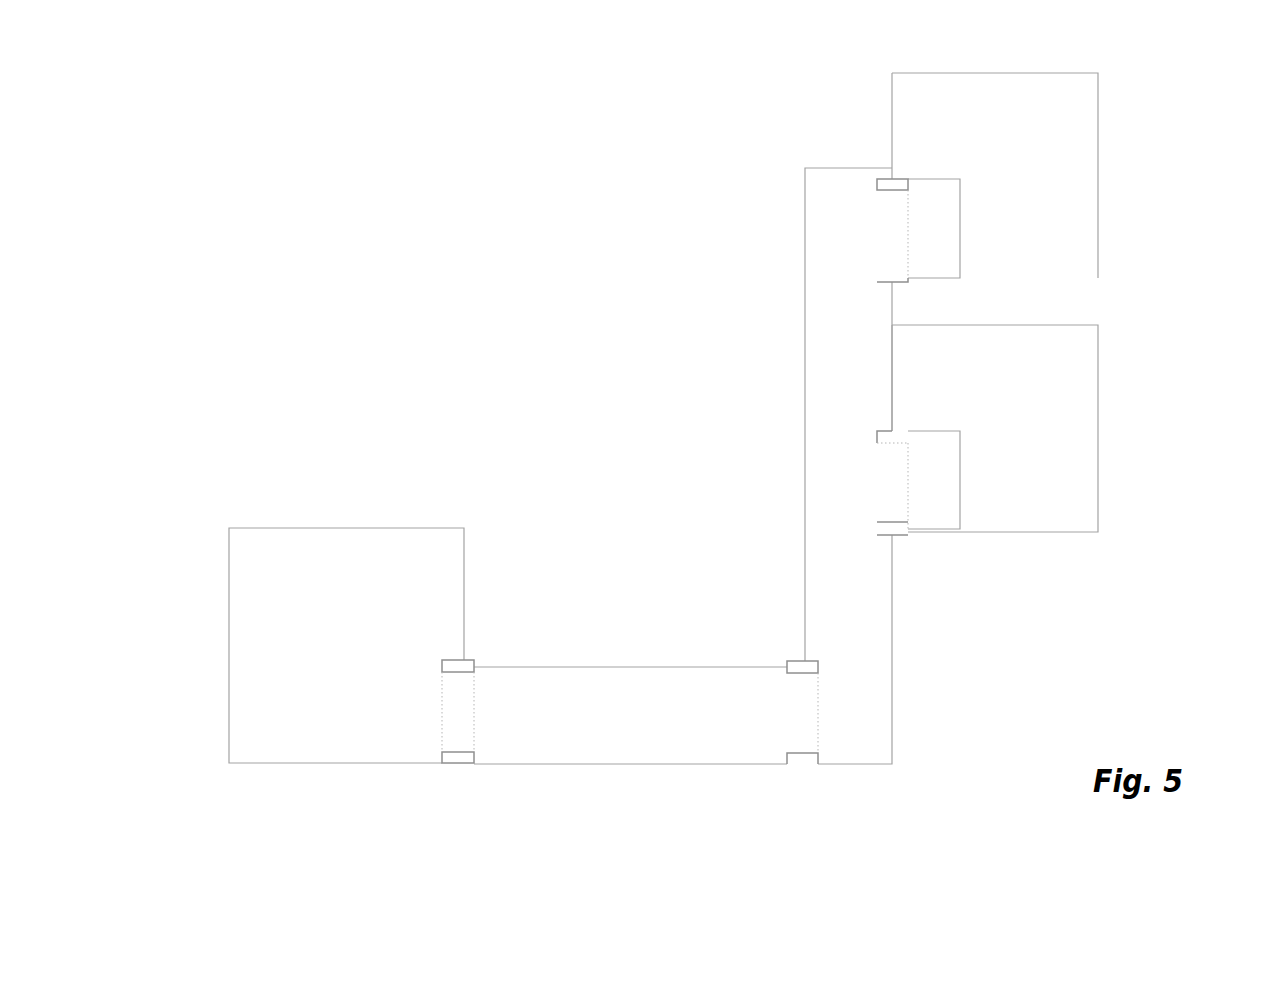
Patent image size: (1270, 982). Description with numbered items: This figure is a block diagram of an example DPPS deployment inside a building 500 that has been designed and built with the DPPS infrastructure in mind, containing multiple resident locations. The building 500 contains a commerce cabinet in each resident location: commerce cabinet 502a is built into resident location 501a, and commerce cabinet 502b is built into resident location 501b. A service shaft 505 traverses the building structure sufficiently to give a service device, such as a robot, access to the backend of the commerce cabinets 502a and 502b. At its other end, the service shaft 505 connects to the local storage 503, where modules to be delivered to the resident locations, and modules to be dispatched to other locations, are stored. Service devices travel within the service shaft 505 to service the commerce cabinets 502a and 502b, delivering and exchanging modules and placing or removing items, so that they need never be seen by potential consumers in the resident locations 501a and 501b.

The building 500 is at (444, 174).
The resident location 501a is at (1055, 73).
The resident location 501b is at (1035, 533).
The commerce cabinet 502a is at (960, 228).
The commerce cabinet 502b is at (960, 480).
The local storage 503 is at (344, 531).
The service shaft 505 is at (805, 356).